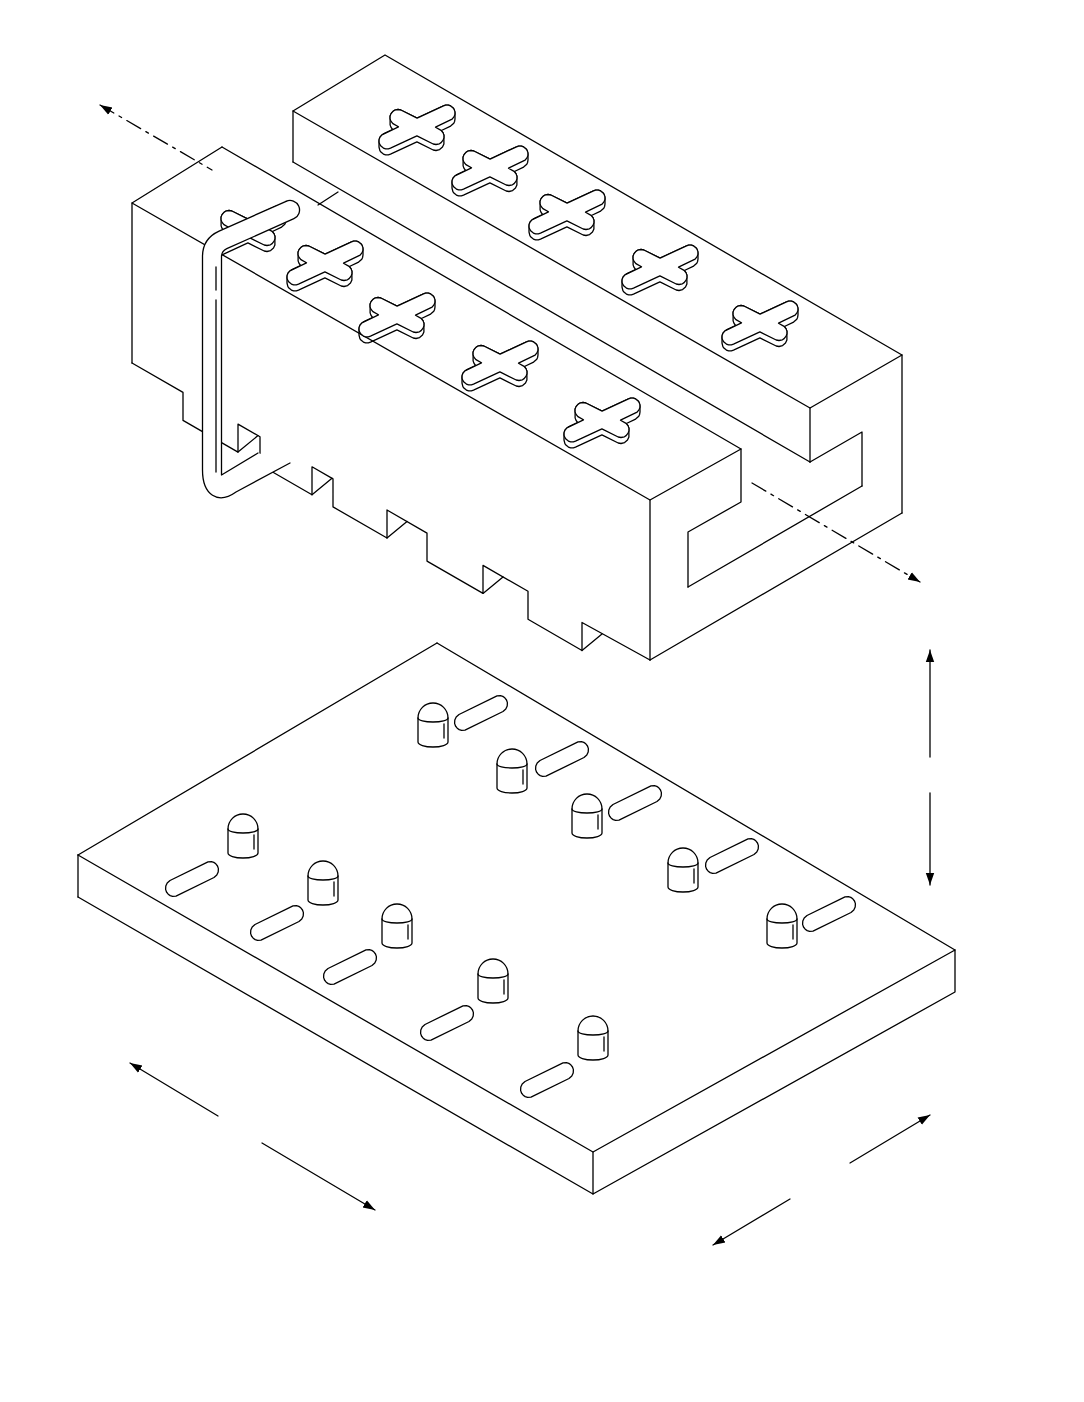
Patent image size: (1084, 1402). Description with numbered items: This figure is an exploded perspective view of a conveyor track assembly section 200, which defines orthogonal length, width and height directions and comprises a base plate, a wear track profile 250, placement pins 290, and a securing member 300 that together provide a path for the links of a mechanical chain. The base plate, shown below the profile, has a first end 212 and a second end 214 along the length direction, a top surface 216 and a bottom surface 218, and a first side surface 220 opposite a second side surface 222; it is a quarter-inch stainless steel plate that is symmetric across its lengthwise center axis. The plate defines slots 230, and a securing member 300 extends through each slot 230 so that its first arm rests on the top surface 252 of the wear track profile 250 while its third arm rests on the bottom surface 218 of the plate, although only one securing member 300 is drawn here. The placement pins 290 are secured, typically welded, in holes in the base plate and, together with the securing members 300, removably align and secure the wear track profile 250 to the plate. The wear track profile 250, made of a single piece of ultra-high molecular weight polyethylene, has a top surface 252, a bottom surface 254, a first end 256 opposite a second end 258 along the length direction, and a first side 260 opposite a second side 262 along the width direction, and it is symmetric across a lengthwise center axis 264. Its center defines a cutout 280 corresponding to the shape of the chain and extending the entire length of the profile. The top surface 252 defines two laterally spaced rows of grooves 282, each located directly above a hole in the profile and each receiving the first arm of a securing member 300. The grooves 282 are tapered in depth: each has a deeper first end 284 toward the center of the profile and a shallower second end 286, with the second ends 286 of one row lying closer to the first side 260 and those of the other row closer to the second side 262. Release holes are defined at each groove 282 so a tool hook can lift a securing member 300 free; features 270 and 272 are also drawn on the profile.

The conveyor track assembly section 200 is at (233, 86).
The first end 212 is at (70, 870).
The second end 214 is at (727, 1127).
The top surface 216 is at (781, 997).
The bottom surface 218 is at (508, 1143).
The first side surface 220 is at (432, 1073).
The second side surface 222 is at (733, 812).
The slot 230 is at (177, 873).
The wear track profile 250 is at (647, 233).
The top surface 252 is at (828, 343).
The bottom surface 254 is at (617, 650).
The first end 256 is at (112, 278).
The second end 258 is at (745, 619).
The first side 260 is at (452, 498).
The second side 262 is at (912, 463).
The lengthwise center axis 264 is at (870, 557).
The clip notch 270 is at (290, 463).
The notches 272 is at (343, 522).
The cutout 280 is at (750, 517).
The groove 282 is at (289, 281).
The first end 284 is at (598, 183).
The second end 286 is at (518, 238).
The placement pin 290 is at (242, 818).
The securing member 300 is at (201, 474).